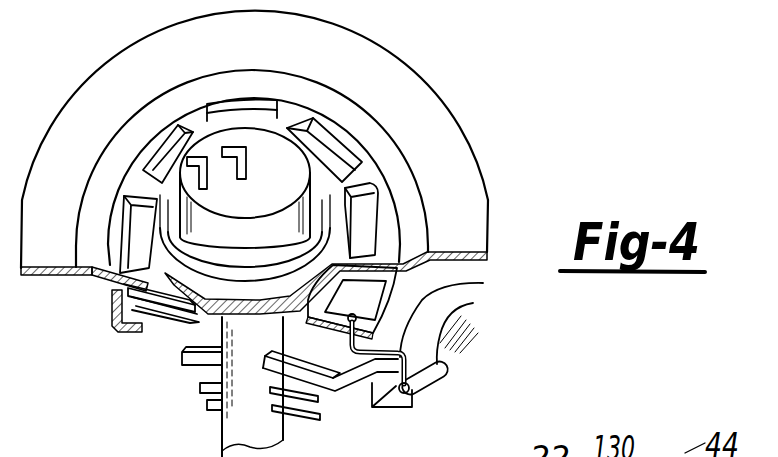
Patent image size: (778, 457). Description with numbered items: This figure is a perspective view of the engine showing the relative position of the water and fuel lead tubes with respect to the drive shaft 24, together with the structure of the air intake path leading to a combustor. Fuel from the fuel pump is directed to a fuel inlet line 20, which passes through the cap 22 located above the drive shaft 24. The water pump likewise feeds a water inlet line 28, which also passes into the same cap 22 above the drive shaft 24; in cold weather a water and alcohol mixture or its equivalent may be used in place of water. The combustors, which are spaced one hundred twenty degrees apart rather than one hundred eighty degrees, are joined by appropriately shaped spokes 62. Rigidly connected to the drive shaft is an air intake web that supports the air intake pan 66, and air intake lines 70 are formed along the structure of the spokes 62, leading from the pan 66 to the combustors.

The fuel inlet line 20 is at (240, 148).
The cap 22 is at (295, 182).
The drive shaft 24 is at (262, 437).
The water inlet line 28 is at (203, 148).
The spokes 62 is at (197, 350).
The air intake pan 66 is at (411, 312).
The air intake lines 70 is at (428, 339).